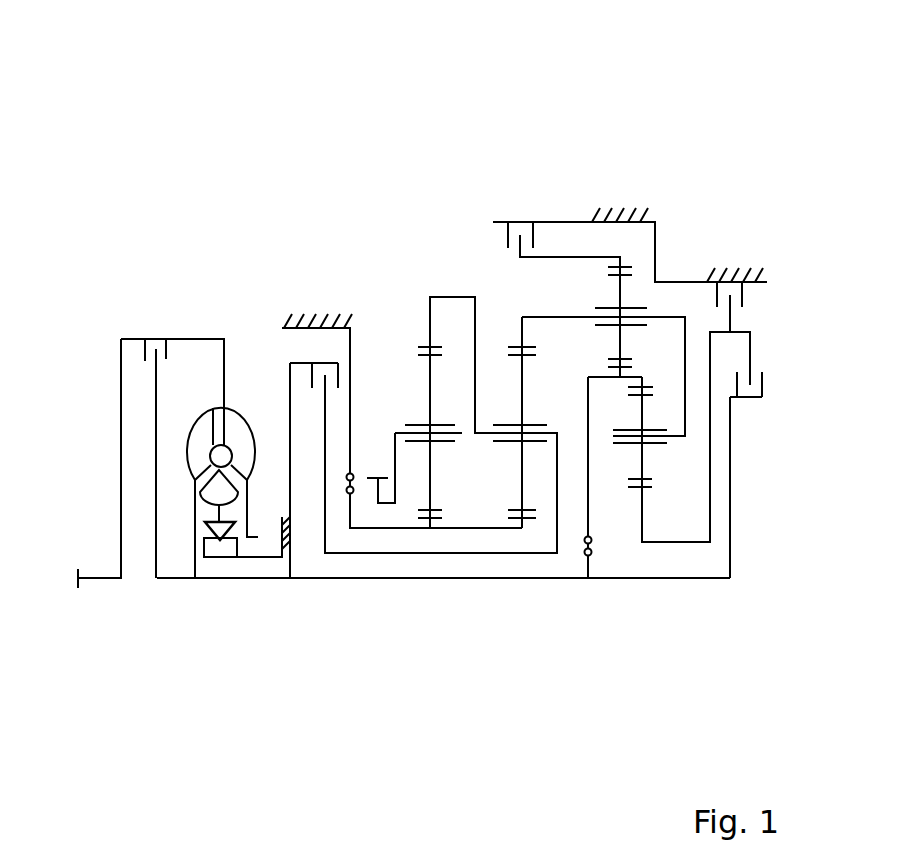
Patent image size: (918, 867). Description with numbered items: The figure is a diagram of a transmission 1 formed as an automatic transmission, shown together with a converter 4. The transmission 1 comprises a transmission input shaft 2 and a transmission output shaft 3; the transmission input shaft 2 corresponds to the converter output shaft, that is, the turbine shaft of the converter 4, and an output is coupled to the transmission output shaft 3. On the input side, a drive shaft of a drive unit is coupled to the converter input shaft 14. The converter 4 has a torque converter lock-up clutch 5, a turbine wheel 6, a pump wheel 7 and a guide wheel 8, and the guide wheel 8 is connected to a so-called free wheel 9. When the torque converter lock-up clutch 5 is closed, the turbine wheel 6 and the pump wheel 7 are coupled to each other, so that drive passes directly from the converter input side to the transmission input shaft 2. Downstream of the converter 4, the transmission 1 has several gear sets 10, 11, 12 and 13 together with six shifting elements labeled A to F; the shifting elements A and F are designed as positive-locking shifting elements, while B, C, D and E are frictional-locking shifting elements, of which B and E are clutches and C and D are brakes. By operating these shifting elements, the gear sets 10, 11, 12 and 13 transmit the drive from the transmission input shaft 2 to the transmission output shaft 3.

The transmission 1 is at (420, 148).
The transmission input shaft 2 is at (274, 580).
The transmission output shaft 3 is at (376, 494).
The converter 4 is at (258, 292).
The torque converter lock-up clutch 5 is at (154, 318).
The turbine wheel 6 is at (205, 437).
The pump wheel 7 is at (240, 433).
The guide wheel 8 is at (213, 490).
The free wheel 9 is at (225, 550).
The gear set 10 is at (432, 604).
The gear set 11 is at (522, 604).
The gear set 12 is at (642, 604).
The gear set 13 is at (619, 176).
The converter input shaft 14 is at (100, 580).